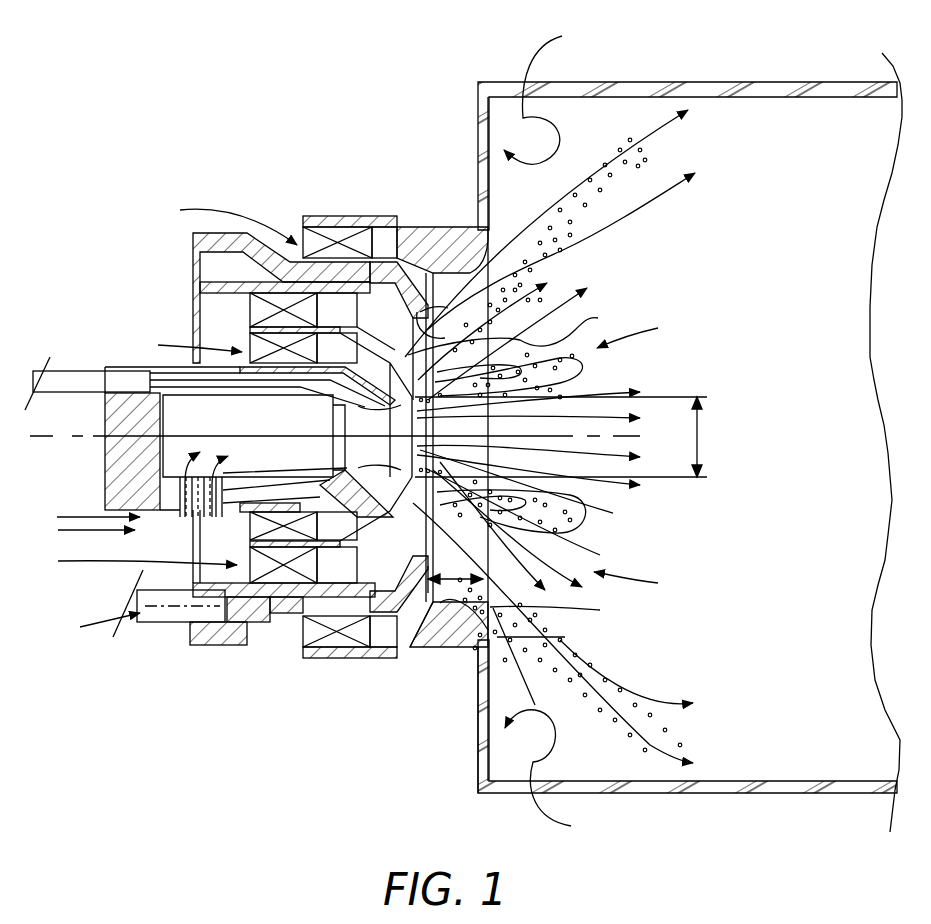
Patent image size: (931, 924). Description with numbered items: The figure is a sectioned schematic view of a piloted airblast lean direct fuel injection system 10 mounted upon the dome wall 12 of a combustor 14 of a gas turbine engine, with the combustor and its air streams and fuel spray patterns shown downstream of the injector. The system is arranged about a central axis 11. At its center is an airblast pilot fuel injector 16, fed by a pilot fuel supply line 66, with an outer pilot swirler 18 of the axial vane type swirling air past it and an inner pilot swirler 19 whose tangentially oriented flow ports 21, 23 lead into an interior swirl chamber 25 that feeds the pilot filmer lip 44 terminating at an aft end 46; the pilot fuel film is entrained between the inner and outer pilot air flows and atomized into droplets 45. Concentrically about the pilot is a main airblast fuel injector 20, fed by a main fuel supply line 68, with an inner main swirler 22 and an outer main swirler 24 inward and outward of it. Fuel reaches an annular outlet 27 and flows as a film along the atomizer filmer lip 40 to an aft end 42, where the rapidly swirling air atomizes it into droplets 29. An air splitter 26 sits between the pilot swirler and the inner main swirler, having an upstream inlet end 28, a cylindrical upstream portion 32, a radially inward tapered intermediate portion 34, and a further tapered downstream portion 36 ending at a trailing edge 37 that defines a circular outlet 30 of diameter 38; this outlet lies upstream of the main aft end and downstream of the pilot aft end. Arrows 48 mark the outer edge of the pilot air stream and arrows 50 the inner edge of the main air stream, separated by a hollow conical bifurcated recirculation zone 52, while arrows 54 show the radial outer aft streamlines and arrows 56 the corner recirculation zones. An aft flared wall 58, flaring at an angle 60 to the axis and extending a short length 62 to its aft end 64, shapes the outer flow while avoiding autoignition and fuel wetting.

The fuel injection system 10 is at (174, 688).
The central axis 11 is at (77, 440).
The dome wall 12 is at (480, 720).
The combustor 14 is at (660, 82).
The pilot fuel injector 16 is at (294, 646).
The pilot swirler 18 is at (253, 348).
The inner pilot swirler 19 is at (180, 492).
The main airblast fuel injector 20 is at (367, 330).
The tangentially oriented flow port 21 is at (196, 470).
The inner main swirler 22 is at (253, 300).
The tangentially oriented flow port 23 is at (222, 470).
The outer main swirler 24 is at (297, 237).
The interior swirl chamber 25 is at (201, 426).
The air splitter 26 is at (345, 240).
The annular outlet 27 is at (342, 492).
The upstream inlet end 28 is at (250, 527).
The fuel droplets 29 is at (636, 172).
The downstream outlet end 30 is at (530, 520).
The cylindrical upstream portion 32 is at (257, 313).
The radially inward tapered intermediate portion 34 is at (345, 240).
The downstream portion 36 is at (524, 518).
The trailing edge 37 is at (399, 488).
The outlet diameter 38 is at (700, 437).
The atomizer filmer lip 40 is at (590, 317).
The aft end 42 is at (598, 272).
The filmer lip 44 is at (371, 408).
The pilot fuel droplets 45 is at (580, 372).
The aft end 46 is at (636, 372).
The pilot air stream outer edge arrows 48 is at (664, 396).
The main air stream inner edge arrows 50 is at (603, 215).
The bifurcated recirculation zone 52 is at (637, 455).
The radial outer aft flow stream lines 54 is at (667, 113).
The corner recirculation zones 56 is at (548, 432).
The aft flared wall 58 is at (462, 605).
The flare angle 60 is at (516, 658).
The flared wall length 62 is at (455, 578).
The aft end of outer wall 64 is at (557, 608).
The pilot fuel supply line 66 is at (73, 370).
The main fuel supply line 68 is at (157, 620).